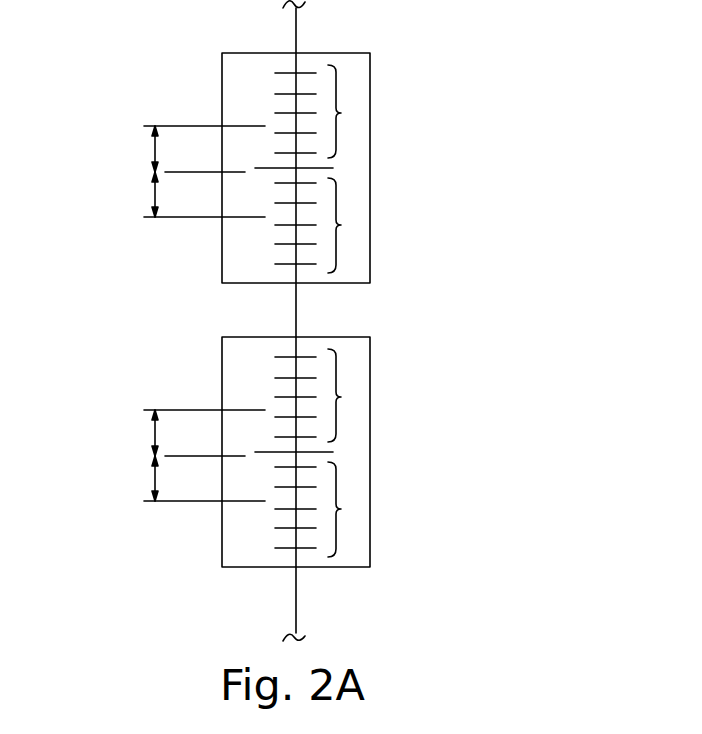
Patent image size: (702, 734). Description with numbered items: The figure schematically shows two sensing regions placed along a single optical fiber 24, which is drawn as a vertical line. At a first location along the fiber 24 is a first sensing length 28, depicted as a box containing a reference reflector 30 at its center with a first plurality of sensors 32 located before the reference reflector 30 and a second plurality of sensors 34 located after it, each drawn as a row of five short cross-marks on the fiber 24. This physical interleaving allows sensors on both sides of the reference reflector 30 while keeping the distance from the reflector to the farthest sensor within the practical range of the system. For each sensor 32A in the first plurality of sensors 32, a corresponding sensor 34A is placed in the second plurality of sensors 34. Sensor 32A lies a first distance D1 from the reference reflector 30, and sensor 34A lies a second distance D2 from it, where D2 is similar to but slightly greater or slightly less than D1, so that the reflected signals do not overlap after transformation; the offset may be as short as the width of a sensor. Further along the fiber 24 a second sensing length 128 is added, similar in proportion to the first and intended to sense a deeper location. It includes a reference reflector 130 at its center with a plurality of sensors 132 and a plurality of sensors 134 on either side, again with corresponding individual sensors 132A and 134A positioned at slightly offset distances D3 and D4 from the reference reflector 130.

The fiber 24 is at (296, 27).
The first sensing length 28 is at (370, 78).
The reference reflector 30 is at (320, 167).
The first plurality of sensors 32 is at (274, 103).
The sensor 32A is at (284, 133).
The second plurality of sensors 34 is at (267, 236).
The sensor 34A is at (283, 225).
The first distance D1 is at (153, 148).
The second distance D2 is at (153, 193).
The second sensing length 128 is at (370, 362).
The reference reflector 130 is at (320, 451).
The first plurality of sensors 132 is at (278, 387).
The sensor 132A is at (284, 417).
The second plurality of sensors 134 is at (273, 520).
The sensor 134A is at (283, 509).
The distance D3 is at (153, 433).
The distance D4 is at (153, 479).